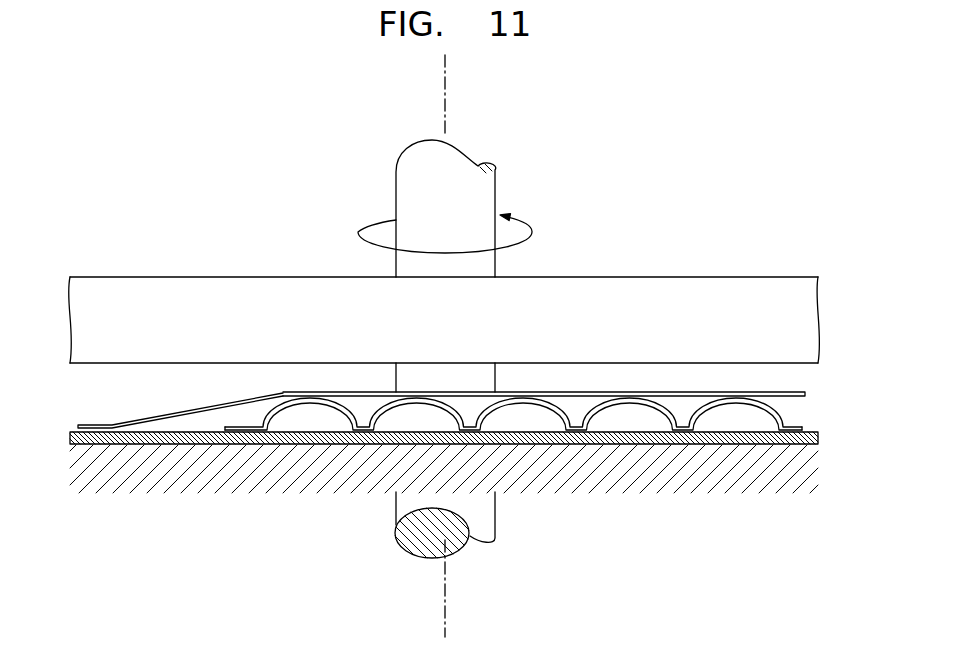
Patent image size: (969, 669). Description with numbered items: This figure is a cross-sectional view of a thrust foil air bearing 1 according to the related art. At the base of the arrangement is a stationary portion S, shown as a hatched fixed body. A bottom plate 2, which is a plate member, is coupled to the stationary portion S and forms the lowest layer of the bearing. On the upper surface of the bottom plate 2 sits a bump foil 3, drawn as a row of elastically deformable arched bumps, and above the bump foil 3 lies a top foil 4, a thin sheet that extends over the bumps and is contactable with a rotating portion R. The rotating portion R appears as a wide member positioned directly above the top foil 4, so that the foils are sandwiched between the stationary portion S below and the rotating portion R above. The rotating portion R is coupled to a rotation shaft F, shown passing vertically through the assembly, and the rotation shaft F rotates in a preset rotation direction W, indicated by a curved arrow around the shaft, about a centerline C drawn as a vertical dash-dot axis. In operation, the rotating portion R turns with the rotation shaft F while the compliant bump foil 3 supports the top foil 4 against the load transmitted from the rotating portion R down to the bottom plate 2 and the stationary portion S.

The thrust foil air bearing 1 is at (425, 348).
The bottom plate 2 is at (337, 442).
The bump foil 3 is at (283, 415).
The top foil 4 is at (192, 408).
The rotation shaft F is at (480, 188).
The rotation direction W is at (532, 230).
The rotating portion R is at (725, 277).
The stationary portion S is at (683, 474).
The centerline C is at (445, 592).